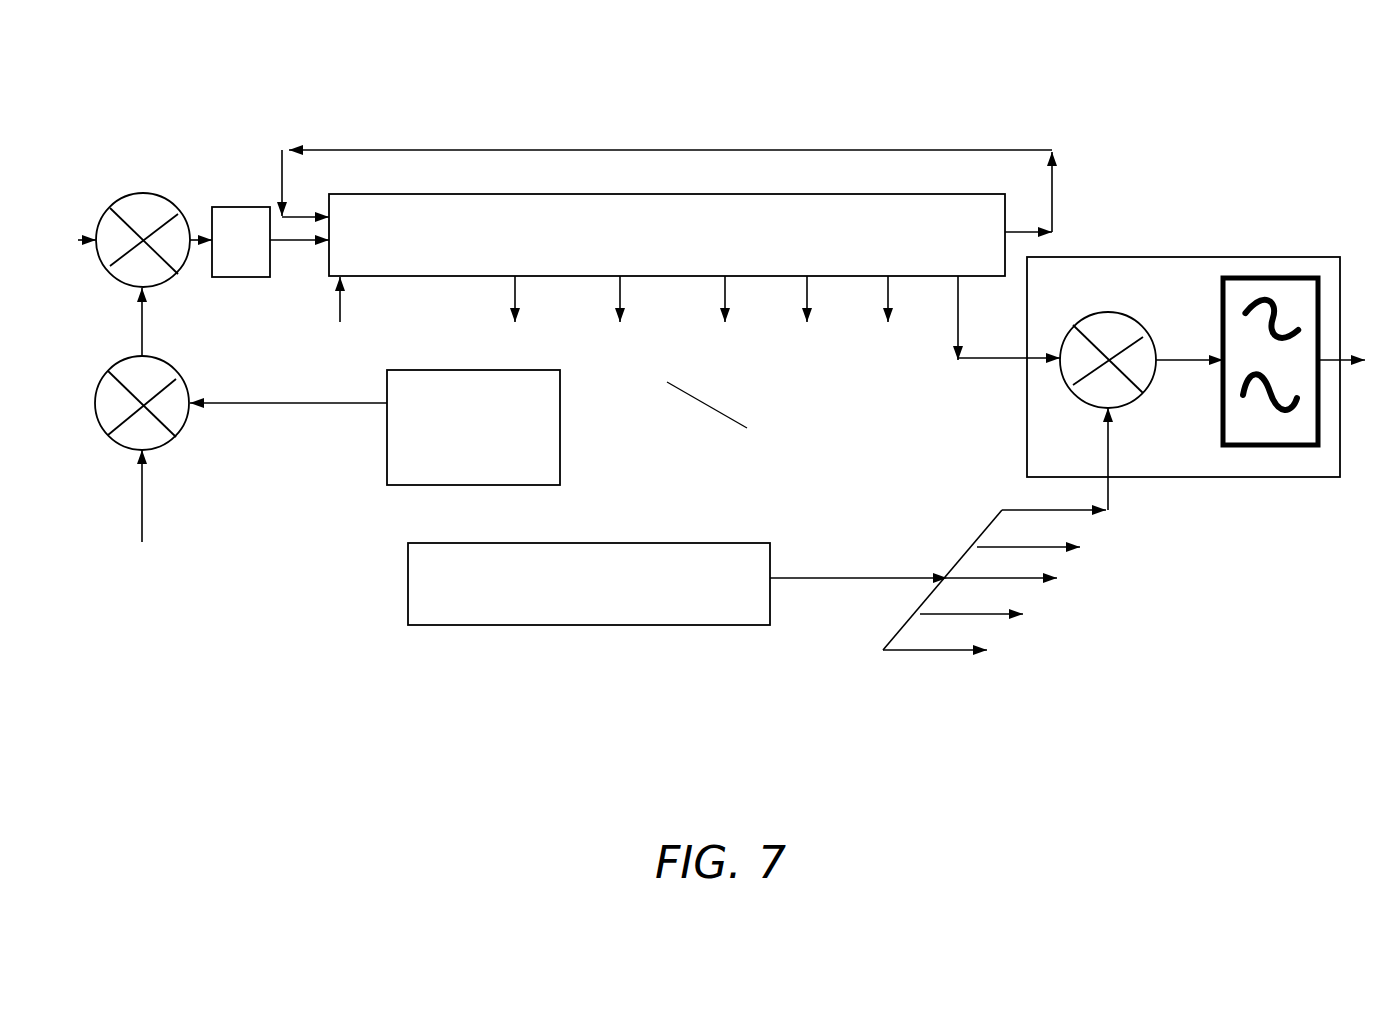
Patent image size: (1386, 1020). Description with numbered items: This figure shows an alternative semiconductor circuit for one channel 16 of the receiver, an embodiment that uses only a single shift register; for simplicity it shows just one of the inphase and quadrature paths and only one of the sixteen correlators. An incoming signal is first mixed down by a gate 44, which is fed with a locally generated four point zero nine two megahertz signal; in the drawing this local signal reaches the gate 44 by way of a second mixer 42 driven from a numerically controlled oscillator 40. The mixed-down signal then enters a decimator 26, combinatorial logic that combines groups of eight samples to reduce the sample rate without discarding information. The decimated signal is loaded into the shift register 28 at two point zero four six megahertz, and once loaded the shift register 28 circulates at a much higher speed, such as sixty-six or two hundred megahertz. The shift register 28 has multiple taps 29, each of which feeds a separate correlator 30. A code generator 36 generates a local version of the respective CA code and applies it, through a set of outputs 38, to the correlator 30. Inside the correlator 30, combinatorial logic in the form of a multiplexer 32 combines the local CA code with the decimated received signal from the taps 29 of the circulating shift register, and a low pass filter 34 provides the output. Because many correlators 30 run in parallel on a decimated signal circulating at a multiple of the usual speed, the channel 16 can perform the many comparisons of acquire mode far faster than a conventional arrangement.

The channel 16 is at (577, 93).
The decimator 26 is at (237, 183).
The shift register 28 is at (925, 175).
The taps 29 is at (818, 358).
The correlators 30 is at (1202, 213).
The multiplexer 32 is at (1108, 290).
The low pass filter 34 is at (1320, 268).
The code generator 36 is at (778, 613).
The code generator outputs 38 is at (1082, 568).
The NCO 40 is at (362, 452).
The mixer 42 is at (187, 448).
The gate 44 is at (143, 172).